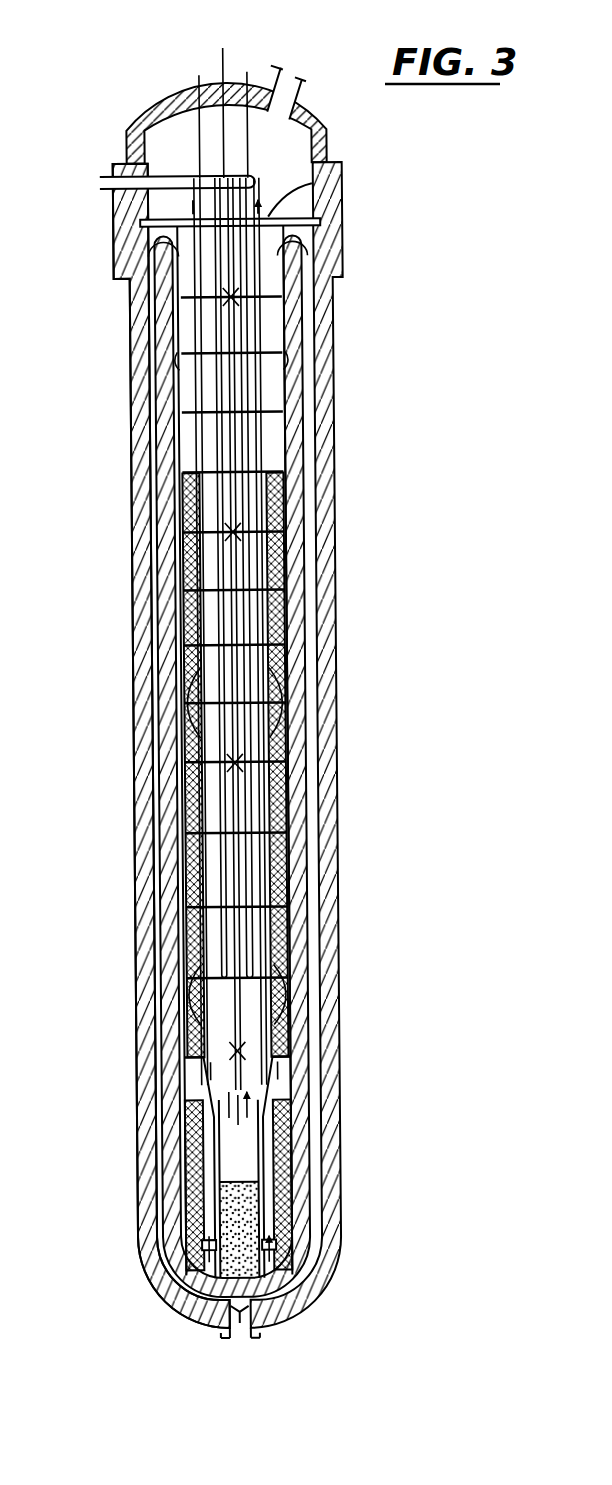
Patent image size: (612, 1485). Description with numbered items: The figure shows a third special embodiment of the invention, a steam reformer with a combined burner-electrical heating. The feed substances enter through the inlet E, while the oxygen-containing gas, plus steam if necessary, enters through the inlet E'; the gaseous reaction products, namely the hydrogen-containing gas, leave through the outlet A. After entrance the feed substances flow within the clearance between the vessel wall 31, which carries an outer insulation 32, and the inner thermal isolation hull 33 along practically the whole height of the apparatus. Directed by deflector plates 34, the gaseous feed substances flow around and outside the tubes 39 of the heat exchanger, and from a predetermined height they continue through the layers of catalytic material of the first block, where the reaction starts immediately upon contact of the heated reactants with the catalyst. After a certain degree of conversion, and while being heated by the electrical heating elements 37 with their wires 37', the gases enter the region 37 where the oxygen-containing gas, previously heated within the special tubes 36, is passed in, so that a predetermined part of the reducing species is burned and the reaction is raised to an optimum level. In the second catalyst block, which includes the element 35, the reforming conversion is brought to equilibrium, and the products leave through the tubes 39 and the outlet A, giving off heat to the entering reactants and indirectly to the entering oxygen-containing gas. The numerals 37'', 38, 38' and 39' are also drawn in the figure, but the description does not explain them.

The vessel wall 31 is at (141, 940).
The outer insulation 32 is at (138, 796).
The inner thermal isolation hull 33 is at (298, 937).
The deflector plates 34 is at (183, 305).
The second catalyst-block element 35 is at (238, 1205).
The special tubes 36 is at (239, 620).
The electrical heating elements 37 is at (313, 633).
The wires 37' is at (196, 113).
The central tube lower end 37'' is at (303, 1166).
The packing ring 38 is at (187, 1185).
The openings 38' is at (179, 1250).
The heat exchanger tubes 39 is at (264, 200).
The baffle plates 39' is at (284, 674).
The outlet A is at (291, 76).
The inlet E is at (241, 1354).
The inlet E' is at (149, 184).